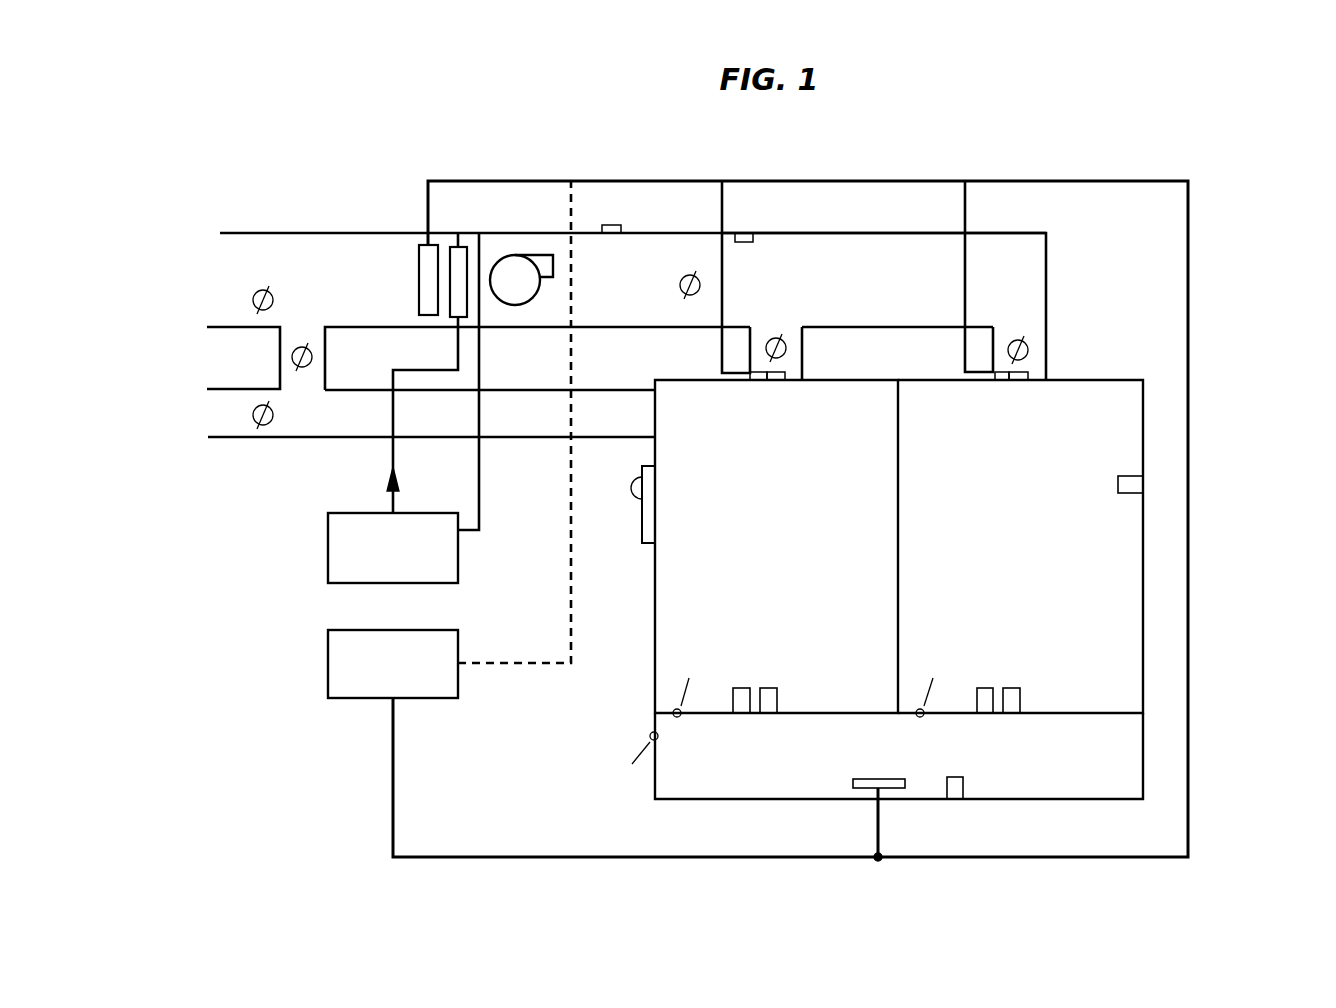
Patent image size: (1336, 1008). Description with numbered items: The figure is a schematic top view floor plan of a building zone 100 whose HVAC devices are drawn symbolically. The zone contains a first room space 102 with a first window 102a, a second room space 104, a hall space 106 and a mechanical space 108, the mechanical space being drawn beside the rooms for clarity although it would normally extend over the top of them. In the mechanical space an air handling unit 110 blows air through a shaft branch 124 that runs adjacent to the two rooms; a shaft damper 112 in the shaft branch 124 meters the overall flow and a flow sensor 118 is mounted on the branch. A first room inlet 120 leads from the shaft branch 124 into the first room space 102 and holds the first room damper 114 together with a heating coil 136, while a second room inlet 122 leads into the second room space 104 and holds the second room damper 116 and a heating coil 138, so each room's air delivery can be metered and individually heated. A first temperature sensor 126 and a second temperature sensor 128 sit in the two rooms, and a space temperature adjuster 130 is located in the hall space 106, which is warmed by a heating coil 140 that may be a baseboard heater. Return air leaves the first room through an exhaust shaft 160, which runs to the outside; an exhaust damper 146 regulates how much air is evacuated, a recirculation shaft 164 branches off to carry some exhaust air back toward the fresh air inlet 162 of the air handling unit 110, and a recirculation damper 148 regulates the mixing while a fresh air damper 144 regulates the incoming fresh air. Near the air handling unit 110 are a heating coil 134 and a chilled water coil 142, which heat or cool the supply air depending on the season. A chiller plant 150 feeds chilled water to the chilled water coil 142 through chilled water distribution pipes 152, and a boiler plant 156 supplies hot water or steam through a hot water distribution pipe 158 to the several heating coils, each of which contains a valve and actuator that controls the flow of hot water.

The building zone 100 is at (1245, 179).
The first room space 102 is at (796, 542).
The first window 102a is at (640, 535).
The second room space 104 is at (1039, 542).
The hall space 106 is at (794, 772).
The mechanical space 108 is at (1083, 316).
The air handling unit 110 is at (513, 253).
The shaft damper 112 is at (680, 279).
The first room damper 114 is at (774, 336).
The second room damper 116 is at (1015, 337).
The flow sensor 118 is at (745, 233).
The first room inlet 120 is at (780, 382).
The second room inlet 122 is at (1018, 382).
The shaft branch 124 is at (901, 256).
The first temperature sensor 126 is at (741, 688).
The second temperature sensor 128 is at (984, 688).
The space temperature adjuster 130 is at (963, 790).
The heating coil 134 is at (419, 285).
The heating coil 136 is at (785, 376).
The heating coil 138 is at (1030, 376).
The heating coil 140 is at (883, 779).
The chilled water coil 142 is at (465, 240).
The fresh air damper 144 is at (273, 297).
The exhaust damper 146 is at (273, 413).
The recirculation damper 148 is at (292, 357).
The chiller plant 150 is at (328, 540).
The chilled water distribution pipes 152 is at (394, 450).
The boiler plant 156 is at (328, 658).
The hot water distribution pipe 158 is at (1087, 181).
The exhaust shaft 160 is at (605, 390).
The fresh air inlet 162 is at (283, 233).
The recirculation shaft 164 is at (325, 340).